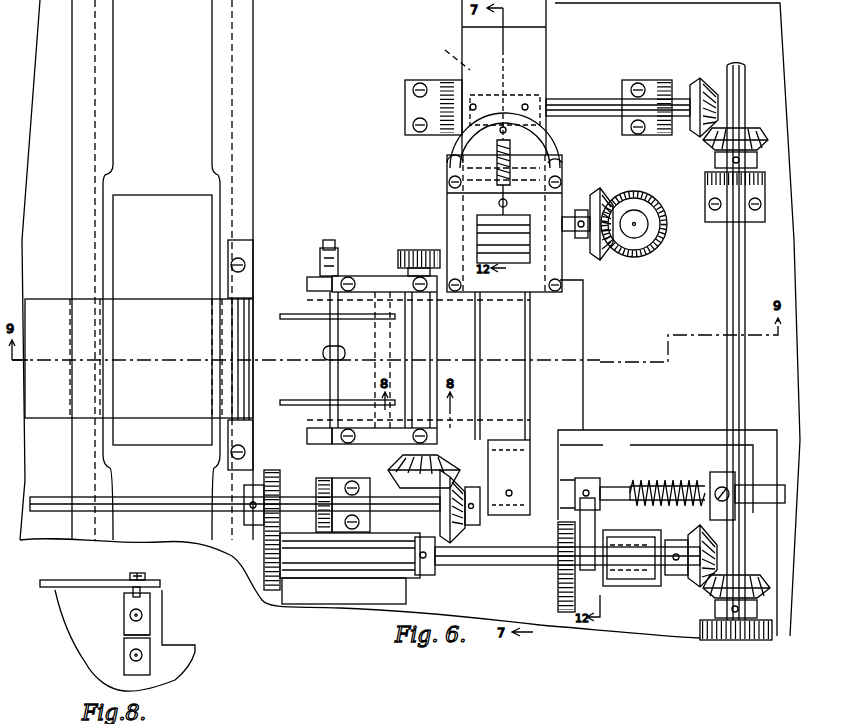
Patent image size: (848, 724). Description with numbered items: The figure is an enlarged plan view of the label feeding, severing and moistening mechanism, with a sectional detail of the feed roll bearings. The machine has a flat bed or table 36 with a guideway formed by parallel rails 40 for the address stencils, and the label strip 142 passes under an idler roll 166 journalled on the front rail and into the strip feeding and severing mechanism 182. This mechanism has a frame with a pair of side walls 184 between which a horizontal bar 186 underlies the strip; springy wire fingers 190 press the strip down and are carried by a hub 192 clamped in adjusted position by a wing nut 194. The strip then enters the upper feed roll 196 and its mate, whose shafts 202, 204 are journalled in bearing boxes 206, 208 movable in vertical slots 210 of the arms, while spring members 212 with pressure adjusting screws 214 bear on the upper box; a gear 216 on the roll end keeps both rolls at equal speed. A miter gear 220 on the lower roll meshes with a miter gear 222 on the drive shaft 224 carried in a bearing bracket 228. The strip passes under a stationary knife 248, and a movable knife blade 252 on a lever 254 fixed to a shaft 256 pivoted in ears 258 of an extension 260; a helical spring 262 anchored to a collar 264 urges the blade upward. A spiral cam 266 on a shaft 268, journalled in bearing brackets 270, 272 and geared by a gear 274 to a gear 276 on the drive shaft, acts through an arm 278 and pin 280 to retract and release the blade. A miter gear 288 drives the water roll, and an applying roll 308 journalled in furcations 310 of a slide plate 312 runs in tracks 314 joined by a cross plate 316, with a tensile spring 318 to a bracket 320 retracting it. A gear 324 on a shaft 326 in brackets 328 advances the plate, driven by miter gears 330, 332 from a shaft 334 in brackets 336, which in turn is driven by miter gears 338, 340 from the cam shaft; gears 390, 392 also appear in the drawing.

In FIG. 6, the bed or table 36 is at (160, 270).
In FIG. 6, the rails 40 is at (210, 100).
In FIG. 6, the label strip 142 is at (148, 312).
In FIG. 6, the idler roll 166 is at (236, 327).
In FIG. 6, the side walls 184 is at (312, 277).
In FIG. 8, the side walls 184 is at (96, 648).
In FIG. 6, the springy wire fingers 190 is at (295, 312).
In FIG. 6, the hub 192 is at (330, 330).
In FIG. 6, the wing nut 194 is at (320, 258).
In FIG. 6, the horizontal bar 186 is at (344, 343).
In FIG. 6, the upper feed roll 196 is at (425, 358).
In FIG. 6, the spring members 212 is at (372, 276).
In FIG. 8, the spring members 212 is at (62, 582).
In FIG. 6, the pressure adjusting screws 214 is at (413, 285).
In FIG. 8, the pressure adjusting screws 214 is at (128, 574).
In FIG. 6, the gear 216 is at (420, 250).
In FIG. 6, the stationary knife 248 is at (470, 356).
In FIG. 6, the knife blade 252 is at (504, 383).
In FIG. 6, the lever 254 is at (509, 477).
In FIG. 6, the shaft 256 is at (572, 478).
In FIG. 6, the ears 258 is at (548, 458).
In FIG. 6, the extension 260 is at (684, 430).
In FIG. 6, the helical spring 262 is at (667, 481).
In FIG. 6, the collar 264 is at (745, 520).
In FIG. 6, the spiral cam 266 is at (560, 595).
In FIG. 6, the shaft 268 is at (512, 565).
In FIG. 6, the bearing bracket 270 is at (642, 586).
In FIG. 6, the bearing bracket 272 is at (330, 560).
In FIG. 6, the gear 274 is at (268, 592).
In FIG. 6, the gear 276 is at (272, 470).
In FIG. 6, the arm 278 is at (592, 551).
In FIG. 6, the pin 280 is at (557, 565).
In FIG. 6, the miter gear 220 is at (436, 470).
In FIG. 6, the miter gear 222 is at (462, 526).
In FIG. 6, the drive shaft 224 is at (158, 500).
In FIG. 6, the bearing bracket 228 is at (322, 480).
In FIG. 6, the miter gear 288 is at (598, 190).
In FIG. 6, the applying roll 308 is at (490, 199).
In FIG. 6, the furcations 310 is at (520, 238).
In FIG. 6, the slide plate 312 is at (522, 76).
In FIG. 6, the tracks 314 is at (447, 220).
In FIG. 6, the cross plate 316 is at (540, 182).
In FIG. 6, the tensile spring 318 is at (496, 146).
In FIG. 6, the bracket 320 is at (541, 130).
In FIG. 6, the gear 324 is at (439, 53).
In FIG. 6, the shaft 326 is at (582, 99).
In FIG. 6, the brackets 328 is at (442, 80).
In FIG. 6, the miter gear 330 is at (702, 80).
In FIG. 6, the miter gear 332 is at (705, 147).
In FIG. 6, the shaft 334 is at (727, 272).
In FIG. 6, the brackets 336 is at (707, 183).
In FIG. 6, the miter gear 338 is at (700, 588).
In FIG. 6, the miter gear 340 is at (710, 602).
In FIG. 6, the gear 390 is at (648, 204).
In FIG. 6, the gear 392 is at (662, 230).
In FIG. 6, the strip feeding and severing mechanism 182 is at (587, 306).
In FIG. 8, the shaft 202 is at (143, 615).
In FIG. 8, the shaft 204 is at (143, 655).
In FIG. 8, the bearing box 206 is at (124, 626).
In FIG. 8, the bearing box 208 is at (126, 668).
In FIG. 8, the vertical slots 210 is at (166, 592).